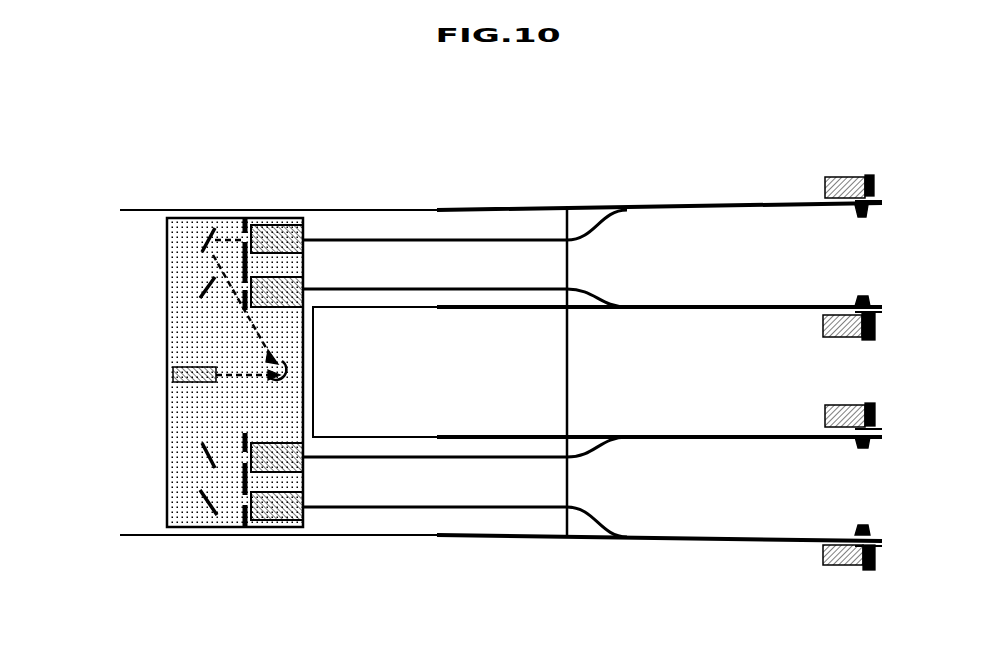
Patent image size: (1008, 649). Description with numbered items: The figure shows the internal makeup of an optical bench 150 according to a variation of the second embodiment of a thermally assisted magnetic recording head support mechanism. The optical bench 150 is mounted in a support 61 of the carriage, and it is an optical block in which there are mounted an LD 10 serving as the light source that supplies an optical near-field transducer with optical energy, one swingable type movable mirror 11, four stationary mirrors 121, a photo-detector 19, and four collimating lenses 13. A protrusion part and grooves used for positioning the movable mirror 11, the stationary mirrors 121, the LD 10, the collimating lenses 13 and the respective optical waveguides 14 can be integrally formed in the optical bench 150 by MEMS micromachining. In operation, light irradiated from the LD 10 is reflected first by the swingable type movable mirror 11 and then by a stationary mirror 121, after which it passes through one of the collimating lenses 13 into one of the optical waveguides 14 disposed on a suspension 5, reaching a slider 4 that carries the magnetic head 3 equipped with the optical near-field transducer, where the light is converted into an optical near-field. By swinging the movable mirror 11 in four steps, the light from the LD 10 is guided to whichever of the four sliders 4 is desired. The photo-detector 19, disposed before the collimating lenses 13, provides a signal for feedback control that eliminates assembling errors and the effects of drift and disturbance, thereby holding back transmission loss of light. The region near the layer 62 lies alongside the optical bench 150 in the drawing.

The magnetic head 3 is at (868, 175).
The slider 4 is at (835, 177).
The suspension 5 is at (735, 207).
The LD 10 is at (190, 368).
The swingable type movable mirror 11 is at (312, 378).
The collimating lens 13 is at (290, 226).
The optical waveguide 14 is at (608, 222).
The photo-detector 19 is at (245, 218).
The support 61 is at (132, 503).
The upper cladding layer 62 is at (382, 223).
The stationary mirror 121 is at (207, 283).
The optical bench 150 is at (185, 508).